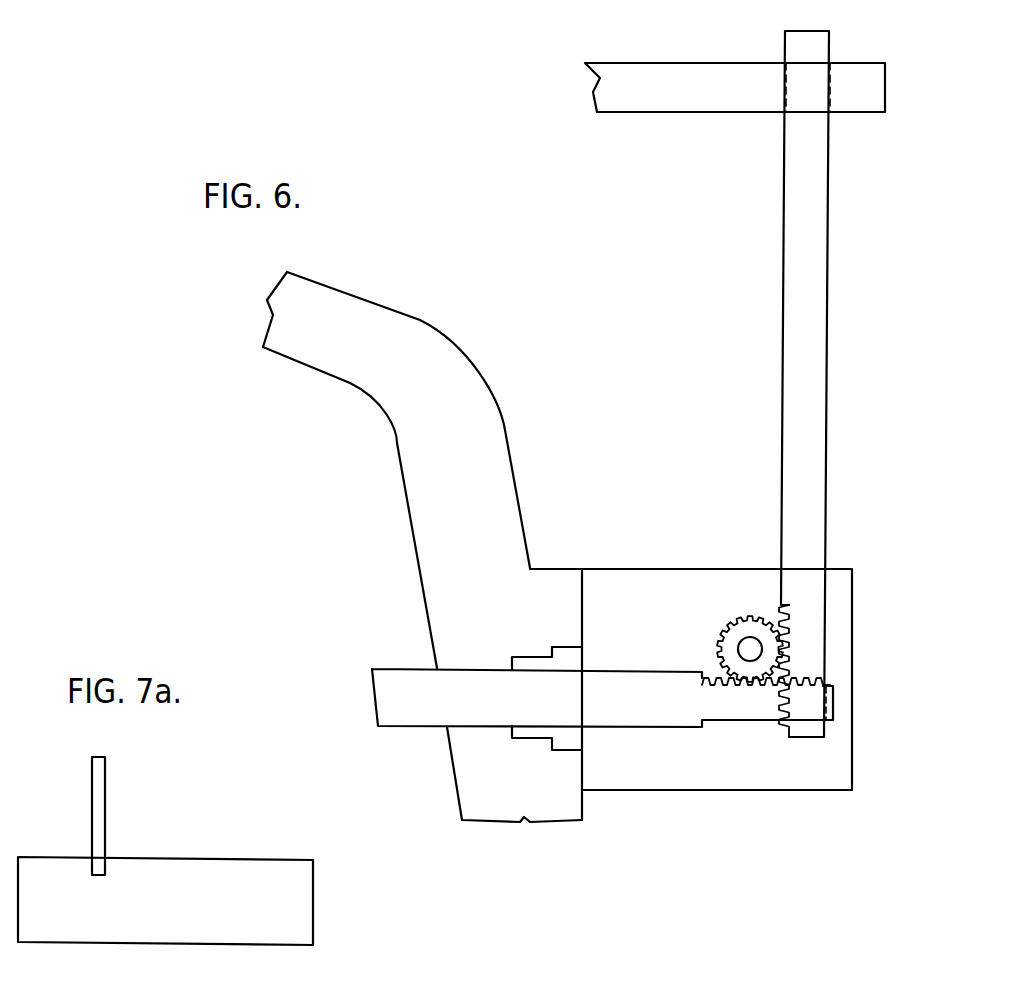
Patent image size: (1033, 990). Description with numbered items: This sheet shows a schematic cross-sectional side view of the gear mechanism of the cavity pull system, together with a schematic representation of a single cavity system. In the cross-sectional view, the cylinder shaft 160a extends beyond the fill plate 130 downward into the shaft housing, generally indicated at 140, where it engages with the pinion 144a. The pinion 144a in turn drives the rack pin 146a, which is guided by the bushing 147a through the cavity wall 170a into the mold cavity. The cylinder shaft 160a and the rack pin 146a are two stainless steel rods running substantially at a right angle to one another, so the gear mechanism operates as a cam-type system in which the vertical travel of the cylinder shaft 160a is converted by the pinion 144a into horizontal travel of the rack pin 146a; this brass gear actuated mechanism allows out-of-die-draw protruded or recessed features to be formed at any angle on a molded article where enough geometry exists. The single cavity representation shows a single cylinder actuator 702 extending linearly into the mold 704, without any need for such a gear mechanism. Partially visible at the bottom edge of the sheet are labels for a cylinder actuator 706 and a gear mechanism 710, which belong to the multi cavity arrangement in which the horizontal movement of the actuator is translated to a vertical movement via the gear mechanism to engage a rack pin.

In FIG. 6, the fill plate 130 is at (855, 72).
In FIG. 6, the cylinder shaft 160a is at (800, 263).
In FIG. 6, the cavity wall 170a is at (465, 385).
In FIG. 6, the pinion 144a is at (743, 623).
In FIG. 6, the rack pin 146a is at (432, 697).
In FIG. 6, the bushing 147a is at (560, 740).
In FIG. 6, the housing 140 is at (855, 682).
In FIG. 7A, the cylinder actuator 702 is at (102, 773).
In FIG. 7A, the mold 704 is at (250, 868).
In FIG. 7A, the cylinder actuator 706 is at (508, 978).
In FIG. 7A, the gear mechanism 710 is at (671, 986).